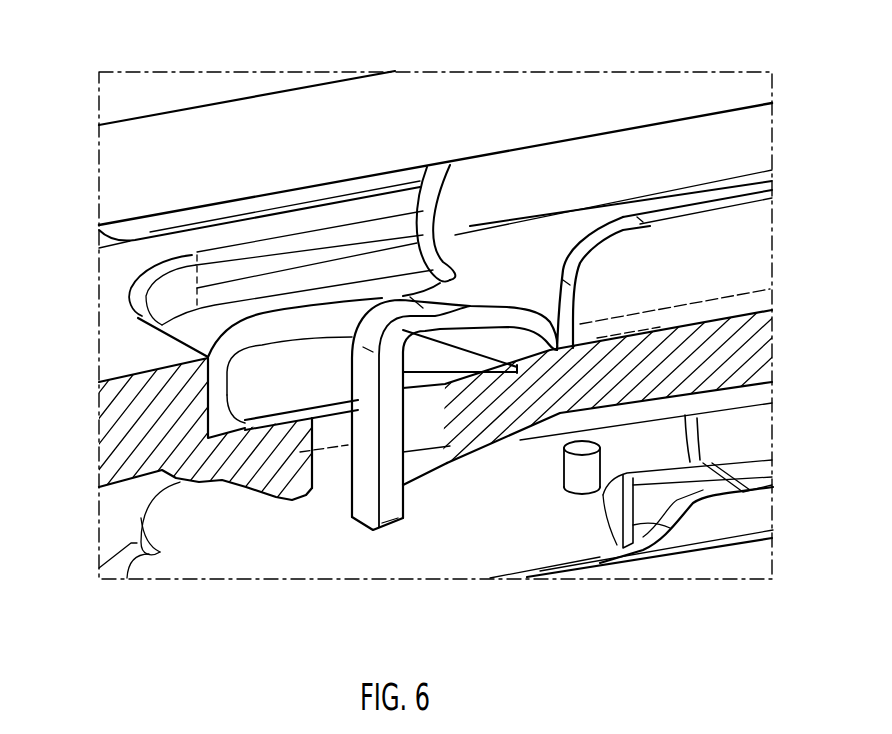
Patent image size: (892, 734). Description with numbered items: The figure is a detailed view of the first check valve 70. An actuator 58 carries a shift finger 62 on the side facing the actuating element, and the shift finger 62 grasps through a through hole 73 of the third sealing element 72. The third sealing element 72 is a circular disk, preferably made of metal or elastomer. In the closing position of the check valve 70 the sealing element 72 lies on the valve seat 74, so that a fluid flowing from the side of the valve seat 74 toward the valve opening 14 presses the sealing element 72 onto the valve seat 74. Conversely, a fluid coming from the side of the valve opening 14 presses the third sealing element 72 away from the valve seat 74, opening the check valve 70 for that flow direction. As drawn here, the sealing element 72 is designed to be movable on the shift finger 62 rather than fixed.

The valve opening 14 is at (413, 437).
The actuator 58 is at (733, 257).
The shift finger 62 is at (445, 338).
The first check valve 70 is at (222, 348).
The third sealing element 72 is at (305, 393).
The through hole 73 is at (352, 395).
The valve seat 74 is at (222, 427).